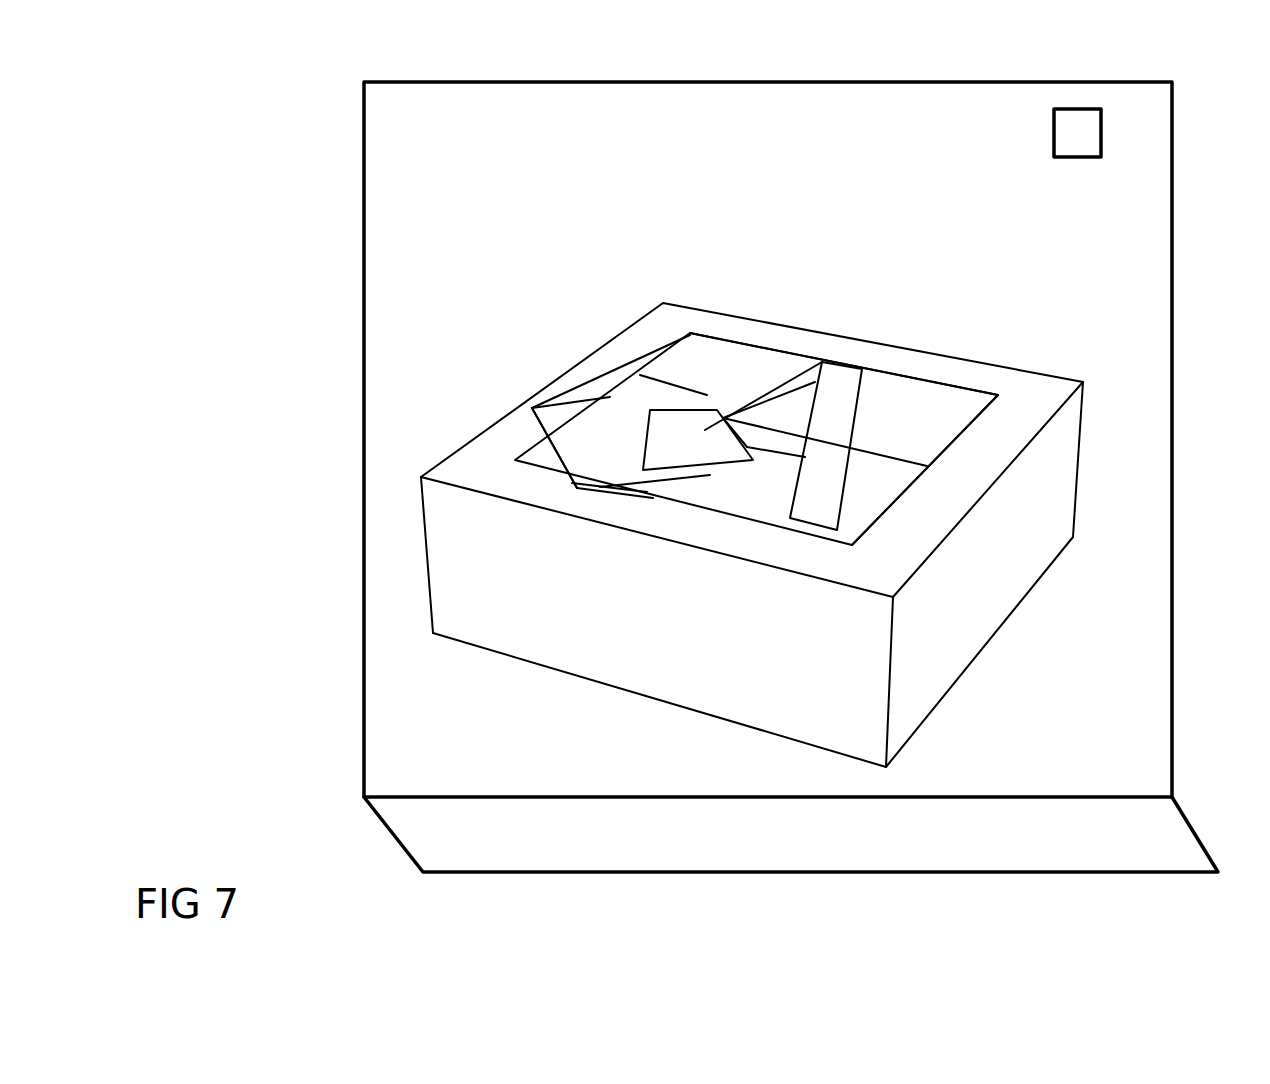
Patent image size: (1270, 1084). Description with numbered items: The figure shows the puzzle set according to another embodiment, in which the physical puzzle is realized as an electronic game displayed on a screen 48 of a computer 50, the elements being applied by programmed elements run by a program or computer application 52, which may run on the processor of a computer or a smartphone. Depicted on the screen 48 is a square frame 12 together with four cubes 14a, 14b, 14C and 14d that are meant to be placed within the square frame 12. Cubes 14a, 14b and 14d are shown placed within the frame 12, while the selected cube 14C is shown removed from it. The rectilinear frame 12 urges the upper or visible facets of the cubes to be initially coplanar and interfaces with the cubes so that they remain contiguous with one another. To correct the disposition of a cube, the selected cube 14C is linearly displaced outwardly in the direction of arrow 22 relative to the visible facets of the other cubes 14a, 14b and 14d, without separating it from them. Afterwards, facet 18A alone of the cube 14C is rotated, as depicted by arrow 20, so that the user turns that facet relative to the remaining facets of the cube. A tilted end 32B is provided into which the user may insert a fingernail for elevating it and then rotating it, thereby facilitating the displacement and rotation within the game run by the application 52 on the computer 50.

The square frame 12 is at (948, 585).
The cube 14a is at (730, 362).
The cube 14b is at (898, 400).
The cube 14C is at (712, 422).
The cube 14d is at (868, 497).
The facet 18A is at (577, 472).
The arrow 20 is at (642, 416).
The arrow 22 is at (503, 520).
The tilted end 32B is at (657, 480).
The screen 48 is at (794, 477).
The computer 50 is at (1198, 407).
The computer application 52 is at (1073, 135).